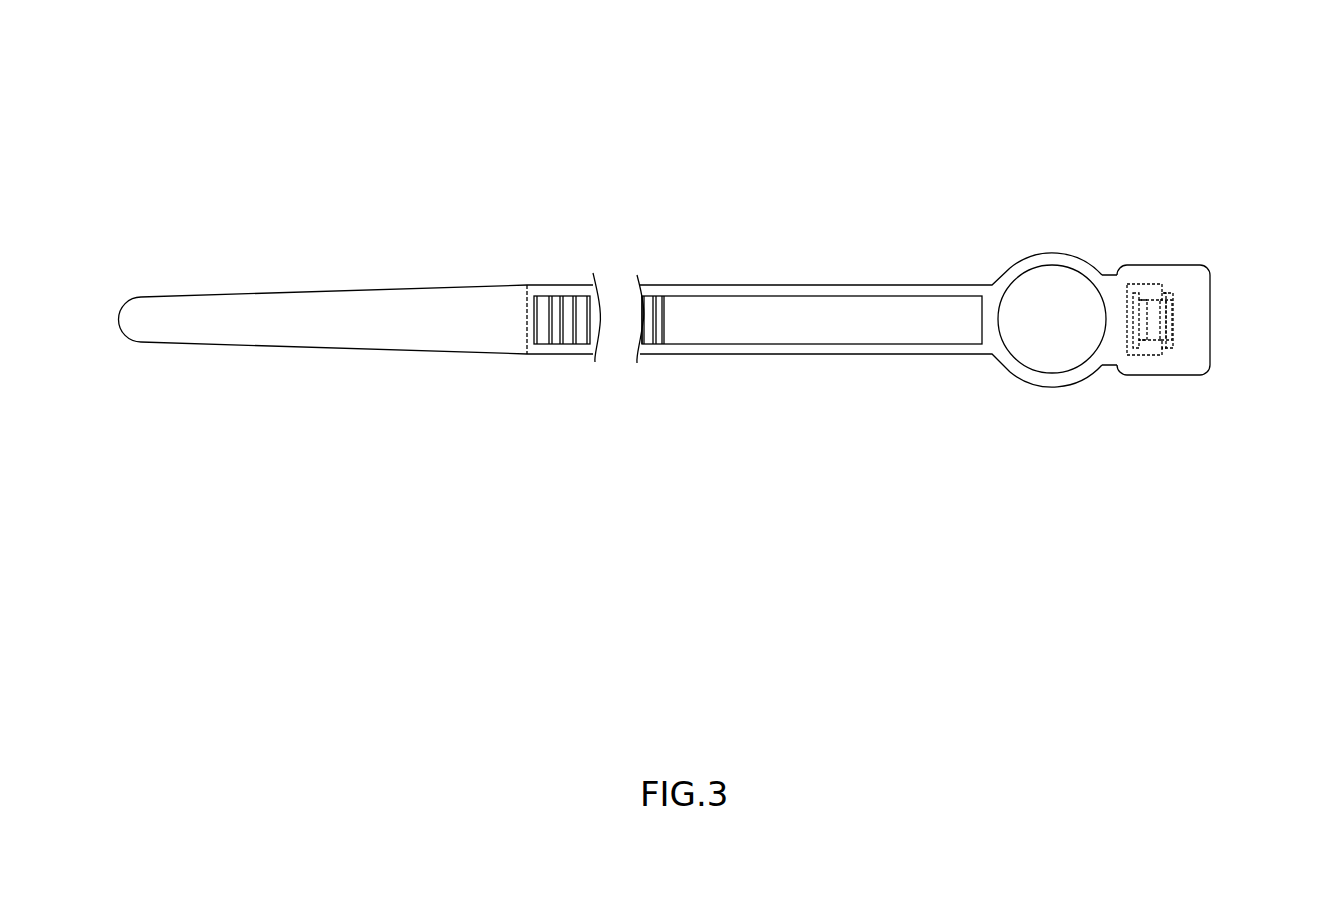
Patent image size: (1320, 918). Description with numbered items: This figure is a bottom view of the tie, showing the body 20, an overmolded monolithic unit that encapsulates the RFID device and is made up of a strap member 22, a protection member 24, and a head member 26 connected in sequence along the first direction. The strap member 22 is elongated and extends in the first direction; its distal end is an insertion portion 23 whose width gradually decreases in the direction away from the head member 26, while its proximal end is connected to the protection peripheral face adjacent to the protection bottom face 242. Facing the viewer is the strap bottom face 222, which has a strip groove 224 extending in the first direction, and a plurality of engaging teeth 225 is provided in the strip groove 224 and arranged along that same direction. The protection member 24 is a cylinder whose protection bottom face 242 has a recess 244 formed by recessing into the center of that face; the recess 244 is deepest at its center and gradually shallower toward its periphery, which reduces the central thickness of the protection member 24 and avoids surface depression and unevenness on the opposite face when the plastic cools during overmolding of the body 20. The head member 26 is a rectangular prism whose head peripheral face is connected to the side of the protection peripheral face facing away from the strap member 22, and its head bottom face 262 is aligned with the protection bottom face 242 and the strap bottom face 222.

The body 20 is at (645, 178).
The strap member 22 is at (557, 285).
The insertion portion 23 is at (407, 318).
The strap bottom face 222 is at (850, 296).
The strip groove 224 is at (801, 342).
The engaging teeth 225 is at (662, 338).
The protection member 24 is at (1043, 253).
The protection bottom face 242 is at (1032, 375).
The recess 244 is at (1060, 290).
The head member 26 is at (1163, 265).
The head bottom face 262 is at (1170, 363).